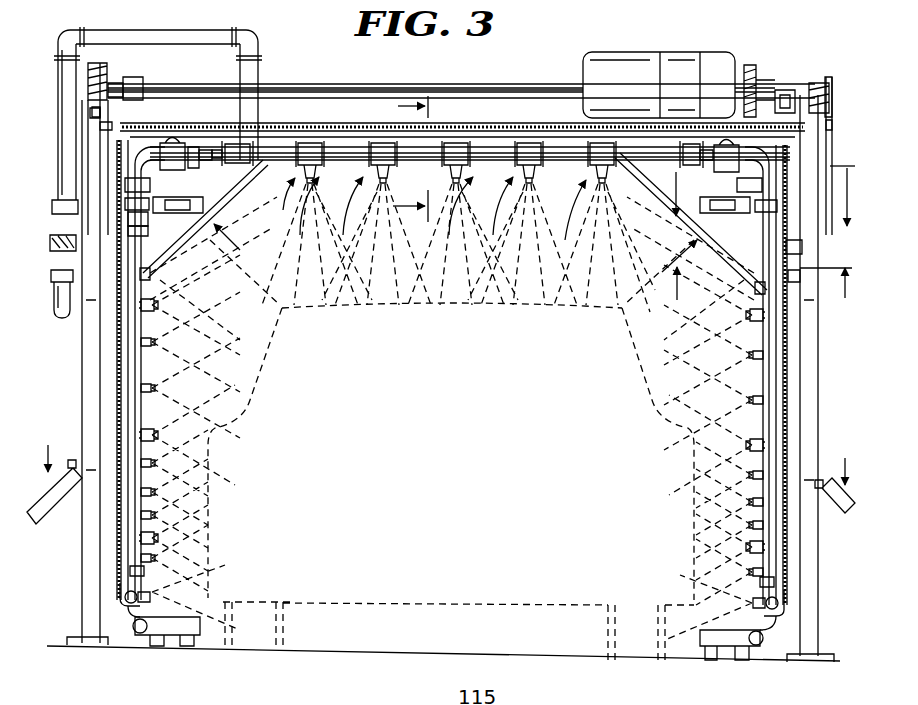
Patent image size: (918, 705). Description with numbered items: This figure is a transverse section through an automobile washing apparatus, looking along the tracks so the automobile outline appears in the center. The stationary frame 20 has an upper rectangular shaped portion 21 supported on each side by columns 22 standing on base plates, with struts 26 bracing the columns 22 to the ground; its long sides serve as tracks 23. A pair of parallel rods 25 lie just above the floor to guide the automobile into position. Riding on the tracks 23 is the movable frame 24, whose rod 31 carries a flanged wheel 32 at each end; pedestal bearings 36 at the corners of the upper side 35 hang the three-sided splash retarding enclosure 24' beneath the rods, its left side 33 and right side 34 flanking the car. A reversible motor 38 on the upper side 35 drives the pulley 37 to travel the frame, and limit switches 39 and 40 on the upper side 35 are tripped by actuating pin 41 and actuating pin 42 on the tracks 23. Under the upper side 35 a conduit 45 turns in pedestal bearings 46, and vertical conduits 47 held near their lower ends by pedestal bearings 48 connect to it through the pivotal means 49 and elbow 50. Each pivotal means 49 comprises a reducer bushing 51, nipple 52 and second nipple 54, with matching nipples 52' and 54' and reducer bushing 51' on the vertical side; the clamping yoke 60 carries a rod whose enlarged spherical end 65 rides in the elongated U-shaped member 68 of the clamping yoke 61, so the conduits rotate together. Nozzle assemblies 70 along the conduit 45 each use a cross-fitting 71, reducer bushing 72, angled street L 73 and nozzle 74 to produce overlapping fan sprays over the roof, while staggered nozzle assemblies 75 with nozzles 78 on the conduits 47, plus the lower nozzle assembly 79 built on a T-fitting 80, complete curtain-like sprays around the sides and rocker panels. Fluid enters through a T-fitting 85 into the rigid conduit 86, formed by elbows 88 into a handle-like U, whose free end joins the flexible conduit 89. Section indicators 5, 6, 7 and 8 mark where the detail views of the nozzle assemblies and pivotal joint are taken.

The stationary frame 20 is at (80, 580).
The upper rectangular shaped portion 21 is at (85, 122).
The columns 22 is at (92, 604).
The tracks 23 is at (88, 112).
The movable frame 24 is at (470, 104).
The splash retarding enclosure 24' is at (470, 106).
The parallel rods 25 is at (172, 640).
The struts 26 is at (48, 512).
The rod 31 is at (475, 92).
The wheel 32 is at (98, 62).
The left side 33 is at (117, 372).
The right side 34 is at (788, 378).
The upper side 35 is at (508, 132).
The pedestal bearings 36 is at (142, 80).
The pulley 37 is at (720, 125).
The reversible motor 38 is at (628, 60).
The limit switch 39 is at (135, 78).
The limit switch 40 is at (756, 72).
The actuating pin 41 is at (100, 128).
The actuating pin 42 is at (831, 100).
The conduit 45 is at (490, 148).
The pedestal bearing 46 is at (225, 163).
The conduits 47 is at (142, 412).
The pedestal bearing 48 is at (144, 573).
The pivotal means 49 is at (720, 267).
The elbow 50 is at (132, 166).
The reducer bushing 51 is at (456, 178).
The reducer bushing 51' is at (437, 263).
The nipple 52 is at (206, 132).
The nipple 52' is at (438, 239).
The second nipple 54 is at (506, 154).
The nipple 54' is at (83, 213).
The clamping yoke 60 is at (180, 168).
The clamping yoke 61 is at (152, 216).
The enlarged spherical end 65 is at (455, 242).
The elongated U-shaped member 68 is at (173, 240).
The nozzle assemblies 70 is at (458, 248).
The cross-fitting 71 is at (314, 165).
The reducer bushing 72 is at (309, 143).
The street L 73 is at (440, 208).
The nozzle 74 is at (452, 206).
The nozzle assemblies 75 is at (140, 306).
The nozzle 78 is at (152, 594).
The nozzle assembly 79 is at (120, 600).
The T-fitting 80 is at (130, 615).
The T-fitting 85 is at (242, 163).
The rigid conduit 86 is at (60, 72).
The elbows 88 is at (64, 30).
The flexible conduit 89 is at (53, 310).
The section line 5 is at (421, 158).
The section line 6 is at (448, 450).
The section line 7 is at (760, 300).
The section line 8 is at (763, 208).